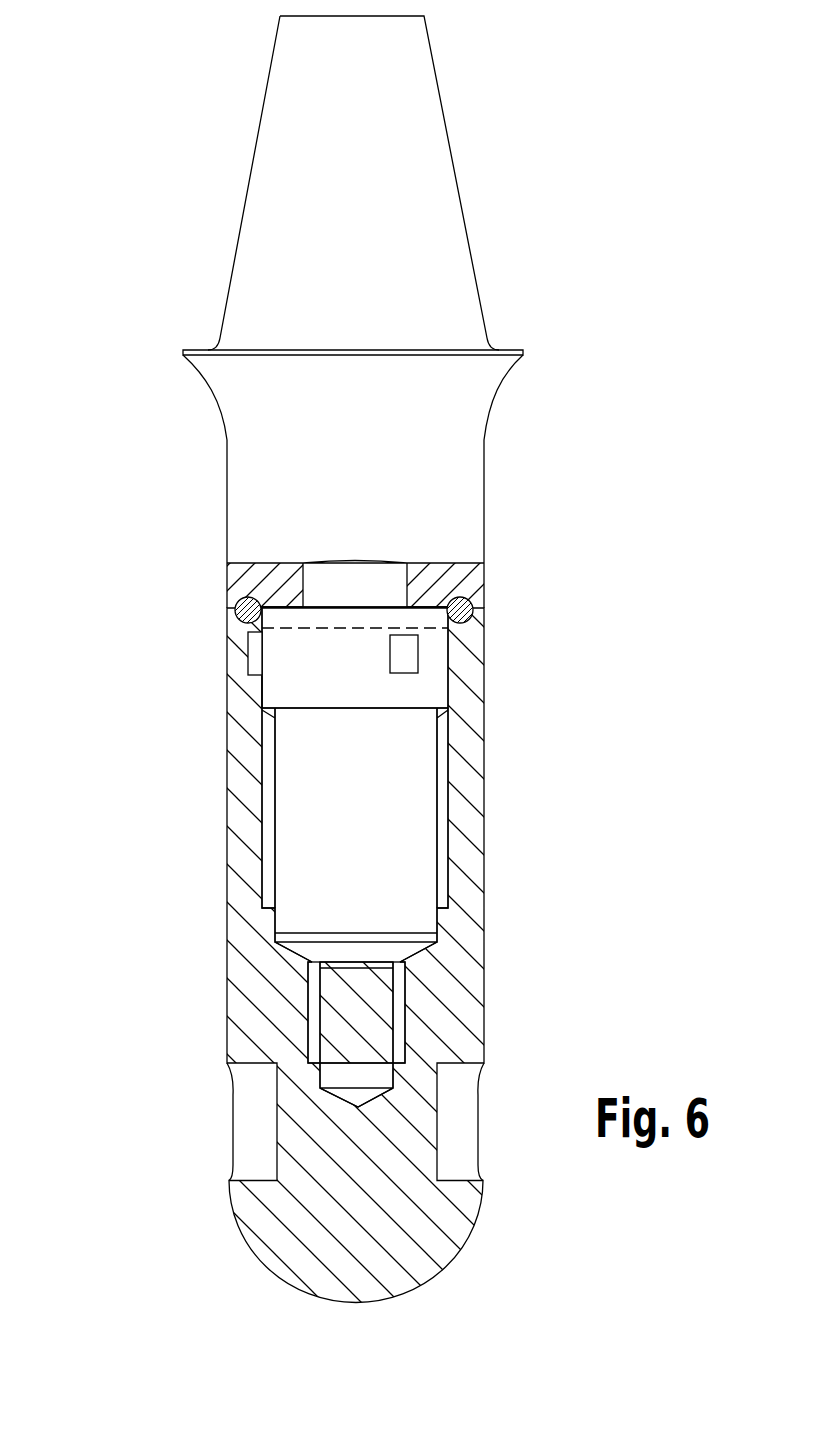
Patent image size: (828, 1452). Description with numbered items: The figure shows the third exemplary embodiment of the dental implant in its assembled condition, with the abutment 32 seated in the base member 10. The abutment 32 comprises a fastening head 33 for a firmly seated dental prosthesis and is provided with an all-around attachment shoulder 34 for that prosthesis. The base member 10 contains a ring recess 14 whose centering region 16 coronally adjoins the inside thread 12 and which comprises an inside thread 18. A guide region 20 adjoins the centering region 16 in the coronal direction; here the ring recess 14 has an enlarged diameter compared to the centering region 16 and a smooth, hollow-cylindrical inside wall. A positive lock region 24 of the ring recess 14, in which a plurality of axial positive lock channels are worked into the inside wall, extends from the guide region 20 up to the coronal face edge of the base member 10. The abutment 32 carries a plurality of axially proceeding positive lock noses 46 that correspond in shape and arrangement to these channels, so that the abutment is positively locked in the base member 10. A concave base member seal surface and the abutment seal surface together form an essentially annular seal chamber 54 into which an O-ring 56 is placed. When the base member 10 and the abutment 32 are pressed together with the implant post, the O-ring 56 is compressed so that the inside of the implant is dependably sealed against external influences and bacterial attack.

The base member 10 is at (548, 826).
The inside thread 12 is at (316, 1009).
The ring recess 14 is at (440, 862).
The centering region 16 is at (209, 940).
The inside thread 18 is at (445, 745).
The guide region 20 is at (207, 712).
The positive lock region 24 is at (207, 673).
The abutment 32 is at (545, 436).
The fastening head 33 is at (428, 155).
The attachment shoulder 34 is at (513, 345).
The positive lock noses 46 is at (408, 654).
The seal chamber 54 is at (227, 583).
The O-ring 56 is at (482, 592).